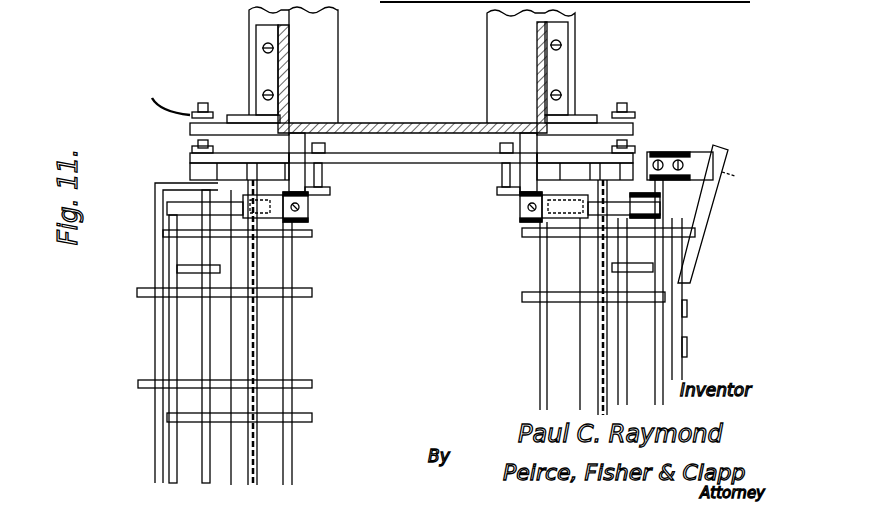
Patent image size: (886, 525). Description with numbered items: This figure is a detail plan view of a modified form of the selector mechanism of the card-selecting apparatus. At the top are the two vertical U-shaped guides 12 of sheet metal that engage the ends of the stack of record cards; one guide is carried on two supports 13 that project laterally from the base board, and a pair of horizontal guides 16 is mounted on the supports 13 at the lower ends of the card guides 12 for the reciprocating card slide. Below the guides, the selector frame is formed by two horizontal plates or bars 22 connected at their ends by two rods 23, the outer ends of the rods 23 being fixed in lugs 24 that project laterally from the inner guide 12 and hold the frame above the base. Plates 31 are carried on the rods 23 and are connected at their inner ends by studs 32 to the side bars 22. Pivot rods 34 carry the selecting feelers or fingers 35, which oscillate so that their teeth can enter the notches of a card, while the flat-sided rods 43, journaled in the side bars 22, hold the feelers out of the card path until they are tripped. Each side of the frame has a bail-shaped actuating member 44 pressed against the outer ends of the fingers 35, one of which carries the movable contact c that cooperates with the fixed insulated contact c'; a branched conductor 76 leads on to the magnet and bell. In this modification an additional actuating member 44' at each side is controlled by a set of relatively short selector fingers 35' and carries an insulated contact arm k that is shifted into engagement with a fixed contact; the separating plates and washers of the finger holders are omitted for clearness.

The vertical U-shaped guide 12 is at (415, 124).
The support 13 is at (247, 57).
The horizontal guide 16 is at (495, 81).
The horizontal plate or bar 22 is at (390, 164).
The rod 23 is at (210, 318).
The lug 24 is at (222, 128).
The plate 31 is at (310, 202).
The stud 32 is at (330, 189).
The pivot rod 34 is at (292, 340).
The selecting feeler or finger 35 is at (426, 320).
The short selector finger 35' is at (392, 331).
The rod 43 is at (254, 430).
The actuating member 44 is at (413, 333).
The supplemental actuating member 44' is at (385, 331).
The branched conductor 76 is at (313, 65).
The movable contact c is at (711, 214).
The fixed insulated contact c' is at (680, 146).
The insulated contact arm k is at (205, 205).